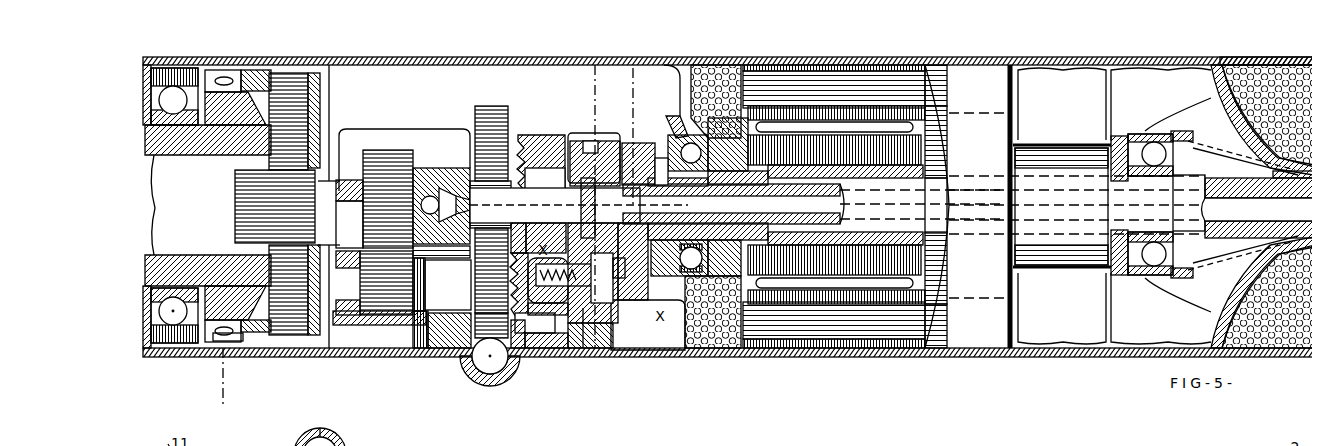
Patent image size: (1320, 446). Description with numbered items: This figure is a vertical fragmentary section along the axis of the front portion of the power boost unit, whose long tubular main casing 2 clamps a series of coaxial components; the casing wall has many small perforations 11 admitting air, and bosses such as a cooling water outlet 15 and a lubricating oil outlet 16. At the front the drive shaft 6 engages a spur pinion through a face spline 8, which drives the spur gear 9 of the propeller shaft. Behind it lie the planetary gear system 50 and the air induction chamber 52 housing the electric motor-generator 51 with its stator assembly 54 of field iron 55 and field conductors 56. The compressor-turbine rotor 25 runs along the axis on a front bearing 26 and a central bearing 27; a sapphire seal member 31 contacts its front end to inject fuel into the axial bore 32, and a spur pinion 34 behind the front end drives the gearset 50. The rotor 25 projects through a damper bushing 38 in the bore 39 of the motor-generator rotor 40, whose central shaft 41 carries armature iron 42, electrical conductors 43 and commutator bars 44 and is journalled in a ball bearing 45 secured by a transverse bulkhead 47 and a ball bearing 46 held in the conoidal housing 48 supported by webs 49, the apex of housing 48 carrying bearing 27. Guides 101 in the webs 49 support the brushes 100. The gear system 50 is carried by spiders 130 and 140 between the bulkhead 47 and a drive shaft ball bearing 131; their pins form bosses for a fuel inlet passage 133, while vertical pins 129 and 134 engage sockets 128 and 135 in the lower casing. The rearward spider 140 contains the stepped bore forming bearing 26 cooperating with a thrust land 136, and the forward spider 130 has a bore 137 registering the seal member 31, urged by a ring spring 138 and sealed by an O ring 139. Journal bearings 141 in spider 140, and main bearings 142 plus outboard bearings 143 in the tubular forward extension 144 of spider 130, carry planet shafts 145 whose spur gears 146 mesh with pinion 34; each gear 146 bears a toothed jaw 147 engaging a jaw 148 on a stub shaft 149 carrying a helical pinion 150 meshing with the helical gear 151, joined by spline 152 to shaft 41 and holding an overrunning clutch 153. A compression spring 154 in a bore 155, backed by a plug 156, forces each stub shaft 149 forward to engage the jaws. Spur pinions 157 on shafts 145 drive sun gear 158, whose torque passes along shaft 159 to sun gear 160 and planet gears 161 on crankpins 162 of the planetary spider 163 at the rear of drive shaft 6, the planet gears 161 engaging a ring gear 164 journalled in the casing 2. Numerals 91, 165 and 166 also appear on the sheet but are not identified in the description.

The main casing 2 is at (218, 383).
The drive shaft 6 is at (150, 180).
The face spline 8 is at (617, 85).
The spur gear 9 is at (587, 35).
The perforations 11 is at (1238, 56).
The cooling water outlet 15 is at (320, 428).
The lubricating oil outlet 16 is at (492, 368).
The compressor-turbine rotor 25 is at (1257, 209).
The front bearing 26 is at (600, 153).
The central bearing 27 is at (1268, 168).
The seal member 31 is at (438, 160).
The axial bore 32 is at (737, 208).
The spur pinion 34 is at (510, 168).
The damper bushing 38 is at (890, 180).
The bore 39 is at (857, 180).
The rotor 40 is at (925, 135).
The central shaft 41 is at (936, 155).
The armature iron 42 is at (926, 244).
The electrical conductors 43 is at (932, 264).
The commutator bars 44 is at (1040, 148).
The ball bearing 45 is at (708, 209).
The ball bearing 46 is at (1154, 204).
The transverse bulkhead 47 is at (680, 92).
The conoidal housing 48 is at (1124, 126).
The webs 49 is at (1204, 206).
The planetary gear system 50 is at (356, 121).
The electric motor-generator 51 is at (1005, 107).
The air induction chamber 52 is at (1293, 56).
The stator assembly 54 is at (861, 109).
The field iron 55 is at (818, 340).
The field conductors 56 is at (846, 322).
The handle 91 is at (718, 443).
The brushes 100 is at (1076, 140).
The guides 101 is at (1062, 206).
The socket 128 is at (422, 345).
The vertical pin 129 is at (433, 342).
The forward spider 130 is at (410, 127).
The drive shaft ball bearing 131 is at (174, 96).
The fuel inlet passage 133 is at (365, 193).
The vertical pin 134 is at (575, 342).
The socket 135 is at (560, 342).
The land 136 is at (562, 165).
The bore 137 is at (436, 284).
The ring type spring 138 is at (430, 162).
The O ring seal 139 is at (432, 164).
The rearward spider 140 is at (578, 125).
The journal bearings 141 is at (612, 312).
The main bearings 142 is at (398, 305).
The outboard bearings 143 is at (373, 283).
The tubular forward extension 144 is at (378, 302).
The planet shafts 145 is at (448, 285).
The spur gear 146 is at (516, 246).
The toothed jaw 147 is at (520, 334).
The jaw 148 is at (522, 306).
The stub shafts 149 is at (569, 280).
The helical spur pinions 150 is at (602, 300).
The helical gear 151 is at (619, 134).
The spline 152 is at (660, 141).
The overrunning clutch 153 is at (639, 134).
The compression spring 154 is at (560, 315).
The bore 155 is at (552, 250).
The plug 156 is at (650, 312).
The spur pinions 157 is at (374, 335).
The sun gear 158 is at (386, 142).
The shaft 159 is at (344, 224).
The sun gear 160 is at (232, 200).
The planet gears 161 is at (300, 104).
The crankpins 162 is at (266, 66).
The planetary spider 163 is at (205, 268).
The ring gear 164 is at (313, 76).
The spacer 165 is at (229, 64).
The bearing 166 is at (210, 62).